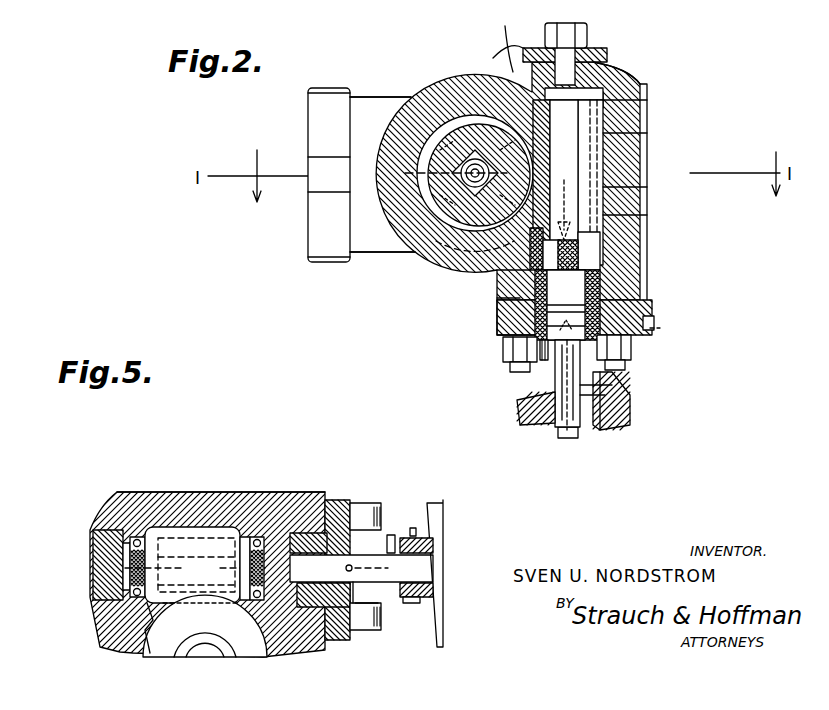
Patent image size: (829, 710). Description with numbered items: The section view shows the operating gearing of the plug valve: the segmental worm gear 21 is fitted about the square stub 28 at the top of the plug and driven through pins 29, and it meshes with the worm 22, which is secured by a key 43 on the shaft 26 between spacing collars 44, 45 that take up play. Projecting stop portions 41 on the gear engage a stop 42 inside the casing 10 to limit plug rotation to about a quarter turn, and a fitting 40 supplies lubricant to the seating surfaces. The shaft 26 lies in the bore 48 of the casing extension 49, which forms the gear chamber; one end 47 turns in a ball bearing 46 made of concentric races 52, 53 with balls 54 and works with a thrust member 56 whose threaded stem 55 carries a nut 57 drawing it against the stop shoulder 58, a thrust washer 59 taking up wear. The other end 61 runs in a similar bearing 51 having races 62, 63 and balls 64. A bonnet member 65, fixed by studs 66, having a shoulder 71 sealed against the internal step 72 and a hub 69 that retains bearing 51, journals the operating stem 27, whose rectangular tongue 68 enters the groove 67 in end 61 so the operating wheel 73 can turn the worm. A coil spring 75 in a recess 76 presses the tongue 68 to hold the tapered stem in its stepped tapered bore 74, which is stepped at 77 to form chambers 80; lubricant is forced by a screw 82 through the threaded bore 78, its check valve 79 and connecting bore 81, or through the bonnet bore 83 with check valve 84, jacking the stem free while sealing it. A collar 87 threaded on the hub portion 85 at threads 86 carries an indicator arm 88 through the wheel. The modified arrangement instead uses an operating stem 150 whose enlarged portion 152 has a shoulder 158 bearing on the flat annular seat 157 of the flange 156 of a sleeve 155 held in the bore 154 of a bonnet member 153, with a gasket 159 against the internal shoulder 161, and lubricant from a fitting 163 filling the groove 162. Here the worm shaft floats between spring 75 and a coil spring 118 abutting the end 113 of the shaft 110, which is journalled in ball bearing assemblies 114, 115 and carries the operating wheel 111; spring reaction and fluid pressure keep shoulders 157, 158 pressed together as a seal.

In FIG. 2, the casing 10 is at (463, 262).
In FIG. 2, the segmental worm gear 21 is at (467, 118).
In FIG. 5, the segmental worm gear 21 is at (157, 643).
In FIG. 2, the worm 22 is at (593, 145).
In FIG. 5, the worm 22 is at (165, 556).
In FIG. 2, the shaft 26 is at (575, 183).
In FIG. 5, the shaft 26 is at (150, 550).
In FIG. 2, the operating stem 27 is at (502, 334).
In FIG. 2, the square stub 28 is at (432, 142).
In FIG. 2, the pins 29 is at (428, 100).
In FIG. 2, the fitting 40 is at (495, 58).
In FIG. 2, the stop portions 41 is at (497, 100).
In FIG. 5, the stop portions 41 is at (145, 641).
In FIG. 2, the stop 42 is at (413, 188).
In FIG. 2, the key 43 is at (648, 167).
In FIG. 2, the spacing collar 44 is at (632, 134).
In FIG. 2, the spacing collar 45 is at (612, 215).
In FIG. 2, the ball bearing 46 is at (596, 72).
In FIG. 5, the ball bearing 46 is at (133, 537).
In FIG. 2, the end of shaft 47 is at (633, 90).
In FIG. 2, the bore 48 is at (650, 98).
In FIG. 5, the bore 48 is at (133, 588).
In FIG. 2, the extended portion of casing 49 is at (620, 285).
In FIG. 2, the bearing 51 is at (490, 275).
In FIG. 5, the bearing 51 is at (286, 540).
In FIG. 2, the race member 52 is at (596, 124).
In FIG. 2, the race member 53 is at (600, 104).
In FIG. 2, the balls 54 is at (620, 112).
In FIG. 2, the threaded stem 55 is at (542, 55).
In FIG. 2, the thrust member 56 is at (583, 56).
In FIG. 2, the nut 57 is at (555, 27).
In FIG. 2, the stop shoulder 58 is at (505, 41).
In FIG. 2, the thrust washer 59 is at (517, 80).
In FIG. 2, the end of shaft 61 is at (643, 272).
In FIG. 2, the race 62 is at (647, 249).
In FIG. 2, the race 63 is at (596, 228).
In FIG. 2, the balls 64 is at (645, 232).
In FIG. 2, the bonnet member 65 is at (645, 306).
In FIG. 2, the studs 66 is at (632, 348).
In FIG. 2, the groove 67 is at (512, 298).
In FIG. 5, the groove 67 is at (305, 528).
In FIG. 2, the rectangular tongue 68 is at (500, 314).
In FIG. 5, the rectangular tongue 68 is at (308, 535).
In FIG. 2, the sleeve or hub 69 is at (647, 262).
In FIG. 2, the shoulder 71 is at (566, 319).
In FIG. 2, the internal step 72 is at (600, 297).
In FIG. 2, the operating wheel 73 is at (630, 422).
In FIG. 2, the tapered bore 74 is at (615, 370).
In FIG. 2, the coil spring 75 is at (567, 305).
In FIG. 5, the coil spring 75 is at (278, 630).
In FIG. 2, the recess 76 is at (562, 218).
In FIG. 5, the recess 76 is at (195, 569).
In FIG. 2, the step 77 is at (507, 350).
In FIG. 2, the threaded bore 78 is at (612, 406).
In FIG. 2, the check valve 79 is at (626, 366).
In FIG. 2, the chambers 80 is at (513, 363).
In FIG. 2, the connecting bore 81 is at (565, 330).
In FIG. 2, the screw 82 is at (655, 328).
In FIG. 2, the bore 83 is at (655, 319).
In FIG. 2, the check valve 84 is at (655, 337).
In FIG. 2, the hub portion 85 is at (538, 367).
In FIG. 2, the threads 86 is at (537, 400).
In FIG. 2, the collar 87 is at (620, 400).
In FIG. 5, the collar 87 is at (440, 530).
In FIG. 2, the arm 88 is at (605, 424).
In FIG. 5, the arm 88 is at (385, 603).
In FIG. 5, the shaft 110 is at (213, 545).
In FIG. 5, the operating wheel 111 is at (442, 631).
In FIG. 5, the end of shaft 113 is at (170, 600).
In FIG. 5, the ball bearing assembly 114 is at (113, 540).
In FIG. 5, the ball bearing assembly 115 is at (108, 542).
In FIG. 5, the coil spring 118 is at (140, 583).
In FIG. 5, the operating stem 150 is at (372, 510).
In FIG. 5, the enlarged portion 152 is at (343, 525).
In FIG. 5, the bonnet member 153 is at (380, 505).
In FIG. 5, the bore 154 is at (416, 528).
In FIG. 5, the operating shaft sleeve 155 is at (372, 616).
In FIG. 5, the flange 156 is at (322, 627).
In FIG. 5, the annular seat 157 is at (302, 630).
In FIG. 5, the shoulder 158 is at (361, 568).
In FIG. 5, the gasket 159 is at (362, 540).
In FIG. 5, the internal shoulder 161 is at (351, 630).
In FIG. 5, the recess 162 is at (360, 628).
In FIG. 5, the fitting 163 is at (384, 568).